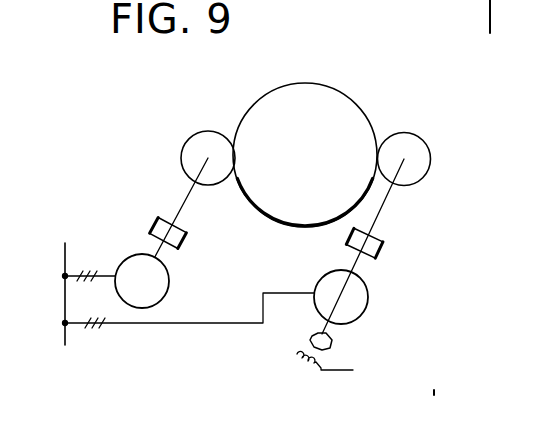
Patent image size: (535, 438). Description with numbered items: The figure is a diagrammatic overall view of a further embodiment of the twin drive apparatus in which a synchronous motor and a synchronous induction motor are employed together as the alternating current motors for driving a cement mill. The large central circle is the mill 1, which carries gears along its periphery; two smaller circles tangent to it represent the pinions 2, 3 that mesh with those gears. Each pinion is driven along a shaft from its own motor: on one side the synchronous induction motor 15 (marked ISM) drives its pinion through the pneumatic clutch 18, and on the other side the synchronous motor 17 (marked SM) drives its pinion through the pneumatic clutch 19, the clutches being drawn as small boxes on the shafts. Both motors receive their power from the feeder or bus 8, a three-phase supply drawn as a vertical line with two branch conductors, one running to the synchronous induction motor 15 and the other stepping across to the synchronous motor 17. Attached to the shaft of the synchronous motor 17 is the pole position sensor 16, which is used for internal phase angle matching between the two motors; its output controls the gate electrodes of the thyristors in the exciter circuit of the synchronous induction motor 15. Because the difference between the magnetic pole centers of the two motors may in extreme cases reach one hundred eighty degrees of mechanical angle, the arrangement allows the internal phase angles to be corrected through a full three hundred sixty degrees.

The mill 1 is at (297, 82).
The pinion 2 is at (431, 158).
The pinion 3 is at (210, 131).
The feeder or bus 8 is at (65, 300).
The synchronous induction motor 15 is at (170, 281).
The pole position sensor 16 is at (332, 345).
The synchronous motor 17 is at (368, 299).
The pneumatic clutch 18 is at (152, 219).
The pneumatic clutch 19 is at (384, 250).